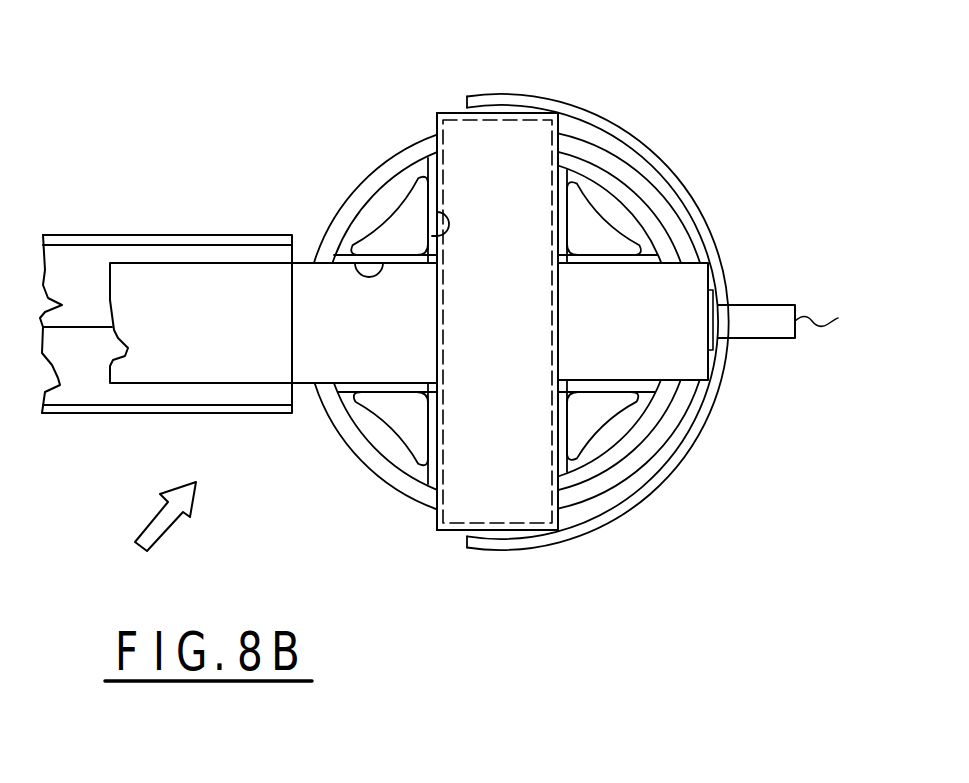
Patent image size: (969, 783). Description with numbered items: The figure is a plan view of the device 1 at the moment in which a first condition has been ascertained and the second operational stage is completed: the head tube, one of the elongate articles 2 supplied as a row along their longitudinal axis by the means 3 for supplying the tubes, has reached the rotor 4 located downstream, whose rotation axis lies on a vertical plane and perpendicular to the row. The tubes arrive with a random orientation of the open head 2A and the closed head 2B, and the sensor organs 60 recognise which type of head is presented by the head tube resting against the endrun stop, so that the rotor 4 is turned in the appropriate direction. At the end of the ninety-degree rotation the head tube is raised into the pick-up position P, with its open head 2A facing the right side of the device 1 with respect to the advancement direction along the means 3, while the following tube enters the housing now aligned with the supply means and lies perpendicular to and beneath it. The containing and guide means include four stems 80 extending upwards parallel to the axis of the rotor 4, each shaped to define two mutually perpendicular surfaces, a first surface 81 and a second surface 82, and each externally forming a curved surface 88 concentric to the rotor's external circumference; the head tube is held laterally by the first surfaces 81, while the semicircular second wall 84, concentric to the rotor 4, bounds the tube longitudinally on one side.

The device 1 is at (158, 533).
The elongate articles 2 is at (206, 287).
The open head 2A is at (457, 532).
The closed head 2B is at (453, 112).
The means for supplying the tubes 3 is at (83, 263).
The rotor 4 is at (524, 311).
The pick-up position P is at (425, 527).
The sensor organs 60 is at (758, 327).
The stems 80 is at (608, 223).
The first surface 81 is at (437, 212).
The second surface 82 is at (350, 257).
The second wall 84 is at (600, 522).
The curved surface 88 is at (627, 430).